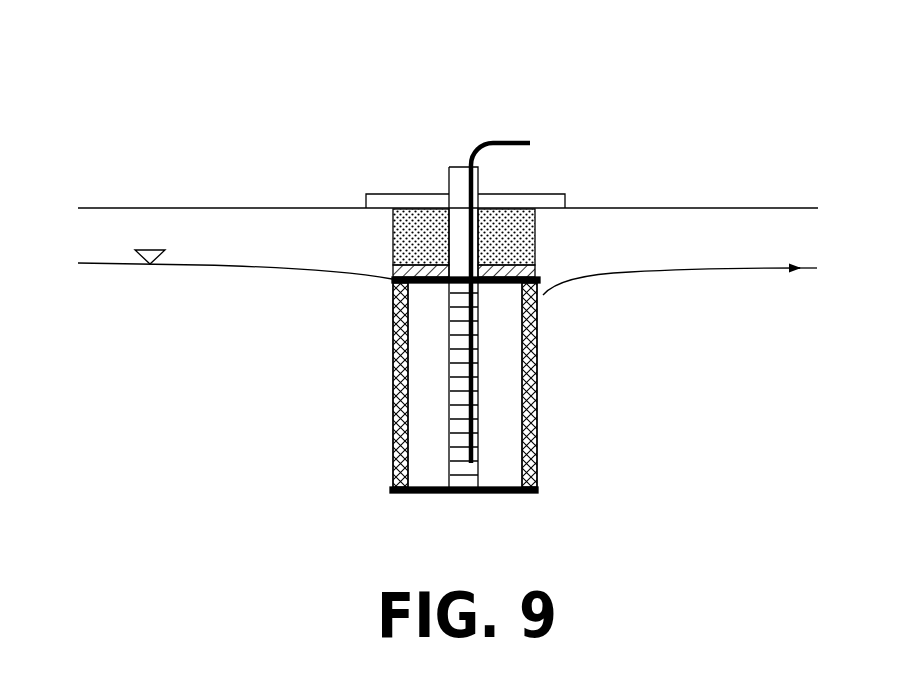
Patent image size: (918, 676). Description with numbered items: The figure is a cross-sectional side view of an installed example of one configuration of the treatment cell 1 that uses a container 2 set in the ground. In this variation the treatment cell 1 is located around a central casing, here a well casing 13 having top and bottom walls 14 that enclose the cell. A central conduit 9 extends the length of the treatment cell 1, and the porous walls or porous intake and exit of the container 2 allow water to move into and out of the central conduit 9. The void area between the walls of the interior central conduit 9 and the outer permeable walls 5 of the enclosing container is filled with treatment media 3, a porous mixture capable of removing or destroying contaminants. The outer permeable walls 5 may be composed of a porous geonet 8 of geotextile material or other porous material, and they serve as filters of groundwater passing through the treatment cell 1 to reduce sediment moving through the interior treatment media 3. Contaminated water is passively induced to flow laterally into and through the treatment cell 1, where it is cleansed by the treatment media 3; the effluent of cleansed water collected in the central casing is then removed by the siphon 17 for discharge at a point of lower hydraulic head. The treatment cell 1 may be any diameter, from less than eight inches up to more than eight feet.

The treatment cell 1 is at (540, 502).
The container 2 is at (395, 390).
The treatment media 3 is at (533, 373).
The outer permeable walls 5 is at (537, 463).
The porous geonet 8 is at (533, 412).
The central conduit 9 is at (395, 361).
The well casing 13 is at (449, 168).
The top and bottom walls 14 is at (388, 283).
The siphon 17 is at (508, 125).